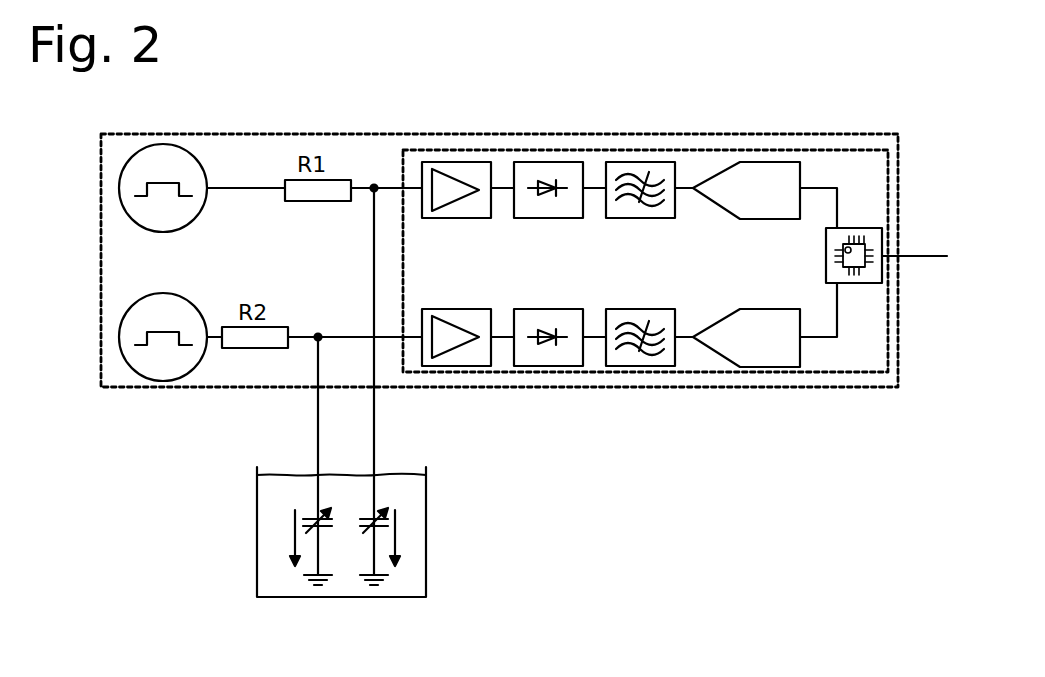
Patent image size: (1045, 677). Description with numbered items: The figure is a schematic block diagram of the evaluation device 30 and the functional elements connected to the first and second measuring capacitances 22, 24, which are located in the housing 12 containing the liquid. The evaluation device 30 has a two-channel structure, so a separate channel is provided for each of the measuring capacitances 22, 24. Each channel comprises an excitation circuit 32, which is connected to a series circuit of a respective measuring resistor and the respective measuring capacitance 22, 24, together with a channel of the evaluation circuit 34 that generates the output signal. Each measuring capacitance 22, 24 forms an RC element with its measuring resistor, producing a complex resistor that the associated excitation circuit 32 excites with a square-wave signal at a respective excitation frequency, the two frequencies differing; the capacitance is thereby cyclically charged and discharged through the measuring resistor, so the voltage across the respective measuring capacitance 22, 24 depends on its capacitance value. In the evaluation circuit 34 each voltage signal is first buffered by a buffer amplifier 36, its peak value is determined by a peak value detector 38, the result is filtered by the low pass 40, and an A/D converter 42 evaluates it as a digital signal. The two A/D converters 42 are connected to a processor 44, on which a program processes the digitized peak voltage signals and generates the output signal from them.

The housing 12 is at (257, 547).
The first measuring capacitance 22 is at (387, 515).
The second measuring capacitance 24 is at (310, 514).
The evaluation device 30 is at (251, 134).
The excitation circuit 32 is at (163, 293).
The evaluation circuit 34 is at (423, 149).
The buffer amplifier 36 is at (463, 218).
The peak value detector 38 is at (543, 218).
The low pass 40 is at (640, 218).
The A/D converter 42 is at (765, 219).
The processor 44 is at (862, 228).